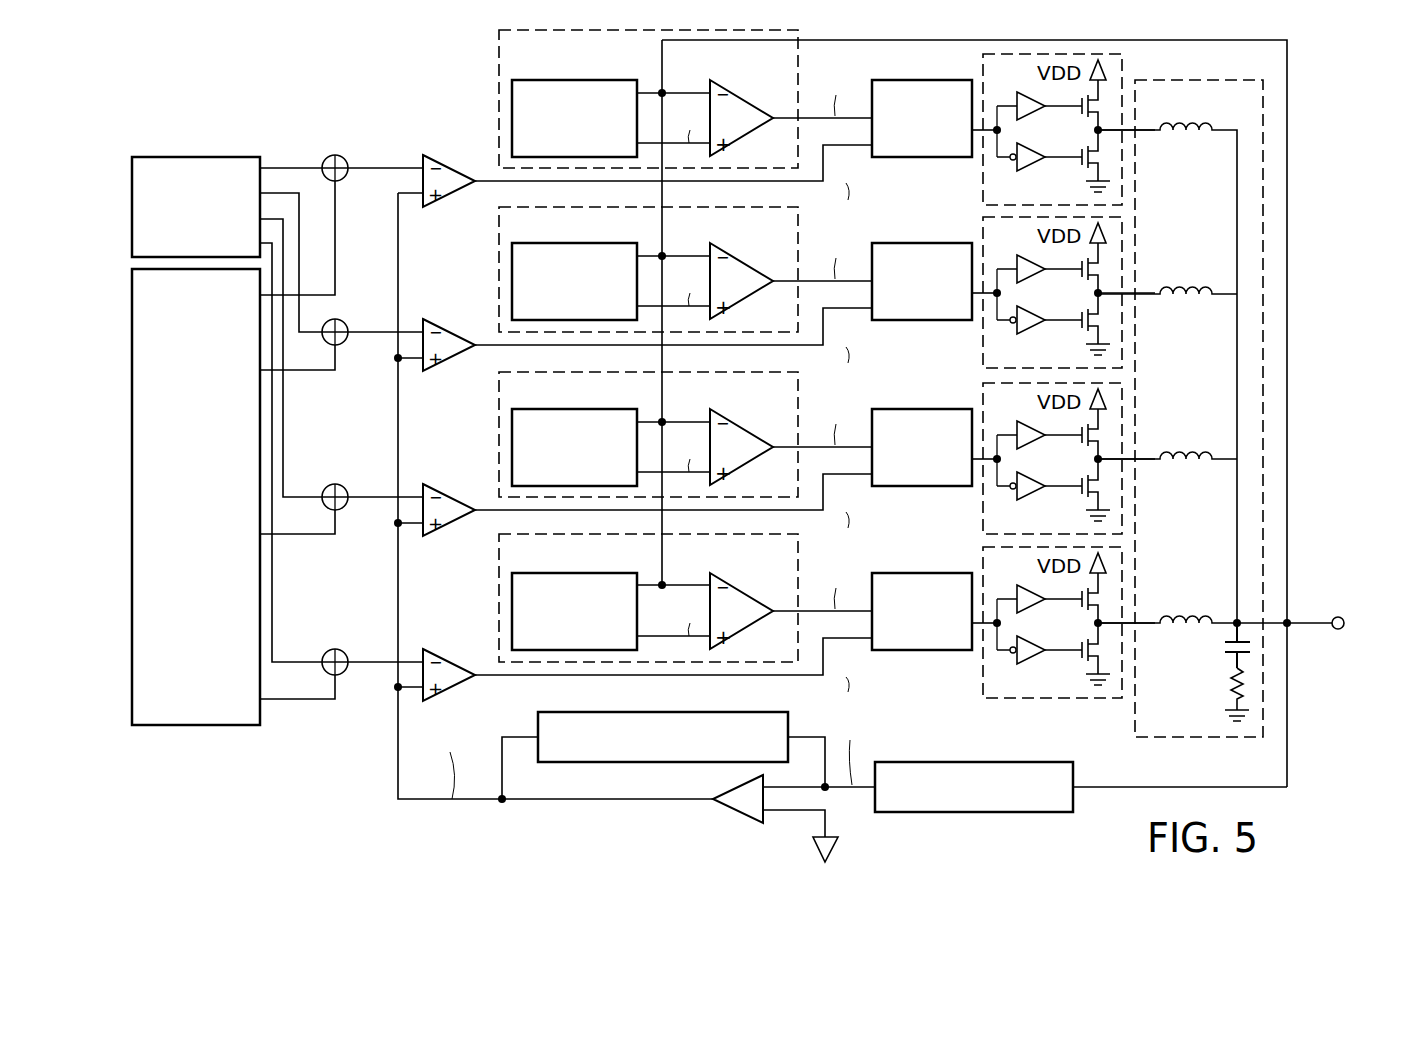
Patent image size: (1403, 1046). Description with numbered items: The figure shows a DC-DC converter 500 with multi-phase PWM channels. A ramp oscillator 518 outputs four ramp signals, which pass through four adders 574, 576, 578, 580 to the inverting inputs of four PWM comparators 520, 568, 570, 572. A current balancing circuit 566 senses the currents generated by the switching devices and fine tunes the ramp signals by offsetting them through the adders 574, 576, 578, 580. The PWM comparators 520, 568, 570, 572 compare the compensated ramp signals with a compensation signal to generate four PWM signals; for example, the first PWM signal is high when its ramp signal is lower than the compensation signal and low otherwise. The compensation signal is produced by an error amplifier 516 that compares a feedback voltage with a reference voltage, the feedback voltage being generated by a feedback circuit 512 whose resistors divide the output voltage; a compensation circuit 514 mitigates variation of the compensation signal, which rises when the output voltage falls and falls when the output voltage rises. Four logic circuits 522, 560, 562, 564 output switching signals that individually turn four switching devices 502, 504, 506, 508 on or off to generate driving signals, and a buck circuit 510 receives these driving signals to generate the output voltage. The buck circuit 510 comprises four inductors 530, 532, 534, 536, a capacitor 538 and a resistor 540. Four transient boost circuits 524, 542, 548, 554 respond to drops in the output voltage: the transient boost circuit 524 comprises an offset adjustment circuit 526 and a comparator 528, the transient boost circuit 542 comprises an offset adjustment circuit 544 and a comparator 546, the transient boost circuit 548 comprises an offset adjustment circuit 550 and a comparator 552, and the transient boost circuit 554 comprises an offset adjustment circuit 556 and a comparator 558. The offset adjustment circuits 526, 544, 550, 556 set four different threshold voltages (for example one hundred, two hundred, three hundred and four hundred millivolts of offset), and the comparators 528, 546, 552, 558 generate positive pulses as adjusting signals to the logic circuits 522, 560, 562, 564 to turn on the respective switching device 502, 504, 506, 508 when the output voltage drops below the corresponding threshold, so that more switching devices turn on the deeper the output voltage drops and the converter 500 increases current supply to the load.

The converter 500 is at (217, 825).
The switching device 502 is at (1072, 200).
The switching device 504 is at (1072, 363).
The switching device 506 is at (1072, 529).
The switching device 508 is at (1072, 693).
The buck circuit 510 is at (1160, 80).
The feedback circuit 512 is at (925, 762).
The compensation circuit 514 is at (629, 764).
The error amplifier 516 is at (738, 820).
The ramp oscillator 518 is at (217, 233).
The PWM comparator 520 is at (428, 157).
The logic circuit 522 is at (896, 80).
The transient boost circuit 524 is at (561, 72).
The offset adjustment circuit 526 is at (583, 80).
The comparator 528 is at (728, 88).
The inductor 530 is at (1182, 125).
The inductor 532 is at (1183, 283).
The inductor 534 is at (1183, 448).
The inductor 536 is at (1183, 612).
The capacitor 538 is at (1222, 646).
The resistor 540 is at (1222, 686).
The transient boost circuit 542 is at (561, 237).
The offset adjustment circuit 544 is at (583, 243).
The comparator 546 is at (728, 251).
The transient boost circuit 548 is at (561, 402).
The offset adjustment circuit 550 is at (583, 409).
The comparator 552 is at (728, 417).
The transient boost circuit 554 is at (561, 566).
The offset adjustment circuit 556 is at (583, 573).
The comparator 558 is at (728, 581).
The logic circuit 560 is at (896, 243).
The logic circuit 562 is at (896, 409).
The logic circuit 564 is at (896, 573).
The current balancing circuit 566 is at (215, 552).
The PWM comparator 568 is at (428, 321).
The PWM comparator 570 is at (428, 486).
The PWM comparator 572 is at (428, 651).
The adder 574 is at (343, 159).
The adder 576 is at (343, 323).
The adder 578 is at (343, 488).
The adder 580 is at (343, 653).